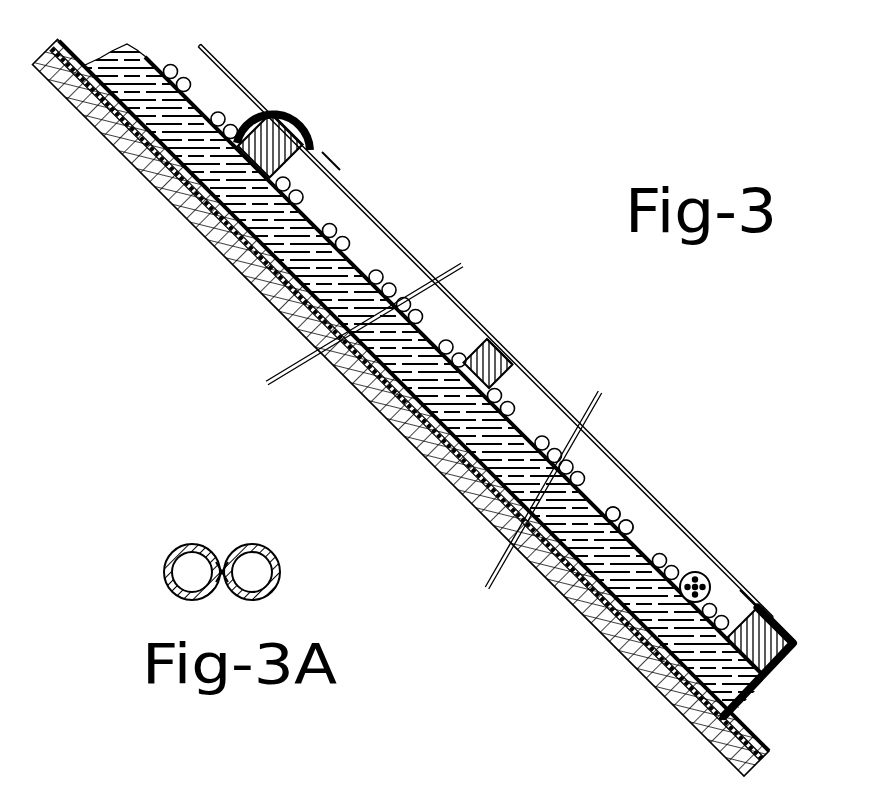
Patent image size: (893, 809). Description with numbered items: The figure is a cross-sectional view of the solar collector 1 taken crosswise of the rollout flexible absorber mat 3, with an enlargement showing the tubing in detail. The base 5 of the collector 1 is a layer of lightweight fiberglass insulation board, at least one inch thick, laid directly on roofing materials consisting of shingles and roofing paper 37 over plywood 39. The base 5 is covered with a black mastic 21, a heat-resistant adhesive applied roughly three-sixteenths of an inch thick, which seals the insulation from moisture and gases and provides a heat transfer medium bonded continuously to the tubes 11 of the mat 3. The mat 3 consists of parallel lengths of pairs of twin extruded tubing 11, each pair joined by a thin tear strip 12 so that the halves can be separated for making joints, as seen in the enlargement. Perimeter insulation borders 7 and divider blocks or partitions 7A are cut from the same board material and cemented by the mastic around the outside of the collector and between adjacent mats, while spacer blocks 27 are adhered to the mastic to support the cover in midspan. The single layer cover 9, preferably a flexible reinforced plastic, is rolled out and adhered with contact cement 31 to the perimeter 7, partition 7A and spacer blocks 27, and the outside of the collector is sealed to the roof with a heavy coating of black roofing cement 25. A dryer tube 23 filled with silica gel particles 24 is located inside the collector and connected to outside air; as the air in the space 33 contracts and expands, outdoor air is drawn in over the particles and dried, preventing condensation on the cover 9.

In FIG. 3, the solar collector 1 is at (487, 543).
In FIG. 3, the rollout flexible absorber mat 3 is at (226, 106).
In FIG. 3, the base 5 is at (185, 217).
In FIG. 3, the perimeter insulation border 7 is at (770, 612).
In FIG. 3, the divider block or partition 7A is at (262, 120).
In FIG. 3, the single layer cover 9 is at (627, 510).
In FIG. 3, the twin extruded tubing 11 is at (389, 289).
In FIG. 3A, the twin extruded tubing 11 is at (427, 463).
In FIG. 3, the tear strip 12 is at (630, 511).
In FIG. 3A, the tear strip 12 is at (221, 566).
In FIG. 3, the black mastic 21 is at (308, 217).
In FIG. 3, the dryer tube 23 is at (693, 563).
In FIG. 3, the silica gel particles 24 is at (700, 586).
In FIG. 3, the black roofing cement 25 is at (292, 120).
In FIG. 3, the spacer block 27 is at (504, 360).
In FIG. 3, the contact cement 31 is at (322, 150).
In FIG. 3, the space 33 is at (542, 414).
In FIG. 3, the shingles and roofing paper 37 is at (238, 266).
In FIG. 3, the plywood 39 is at (288, 307).